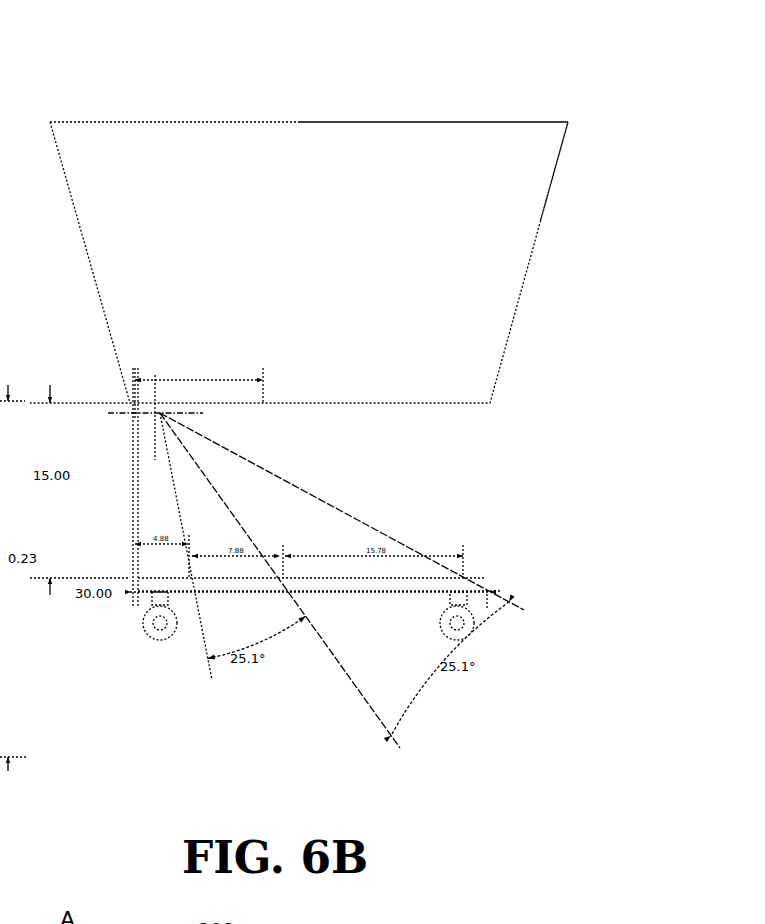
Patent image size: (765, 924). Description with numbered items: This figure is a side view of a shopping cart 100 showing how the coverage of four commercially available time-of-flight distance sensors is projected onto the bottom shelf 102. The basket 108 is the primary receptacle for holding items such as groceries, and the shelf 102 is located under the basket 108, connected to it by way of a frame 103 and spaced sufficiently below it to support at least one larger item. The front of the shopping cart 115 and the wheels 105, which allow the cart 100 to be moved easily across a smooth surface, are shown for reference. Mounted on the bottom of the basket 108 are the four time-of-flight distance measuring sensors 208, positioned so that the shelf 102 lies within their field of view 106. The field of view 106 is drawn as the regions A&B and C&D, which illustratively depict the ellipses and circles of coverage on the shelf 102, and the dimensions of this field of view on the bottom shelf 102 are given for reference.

The shopping cart 100 is at (351, 257).
The shelf 102 is at (487, 583).
The frame 103 is at (133, 476).
The wheels 105 is at (162, 641).
The field of view 106 is at (342, 580).
The basket 108 is at (563, 153).
The front of the cart 115 is at (558, 113).
The distance measuring sensor 208 is at (178, 412).